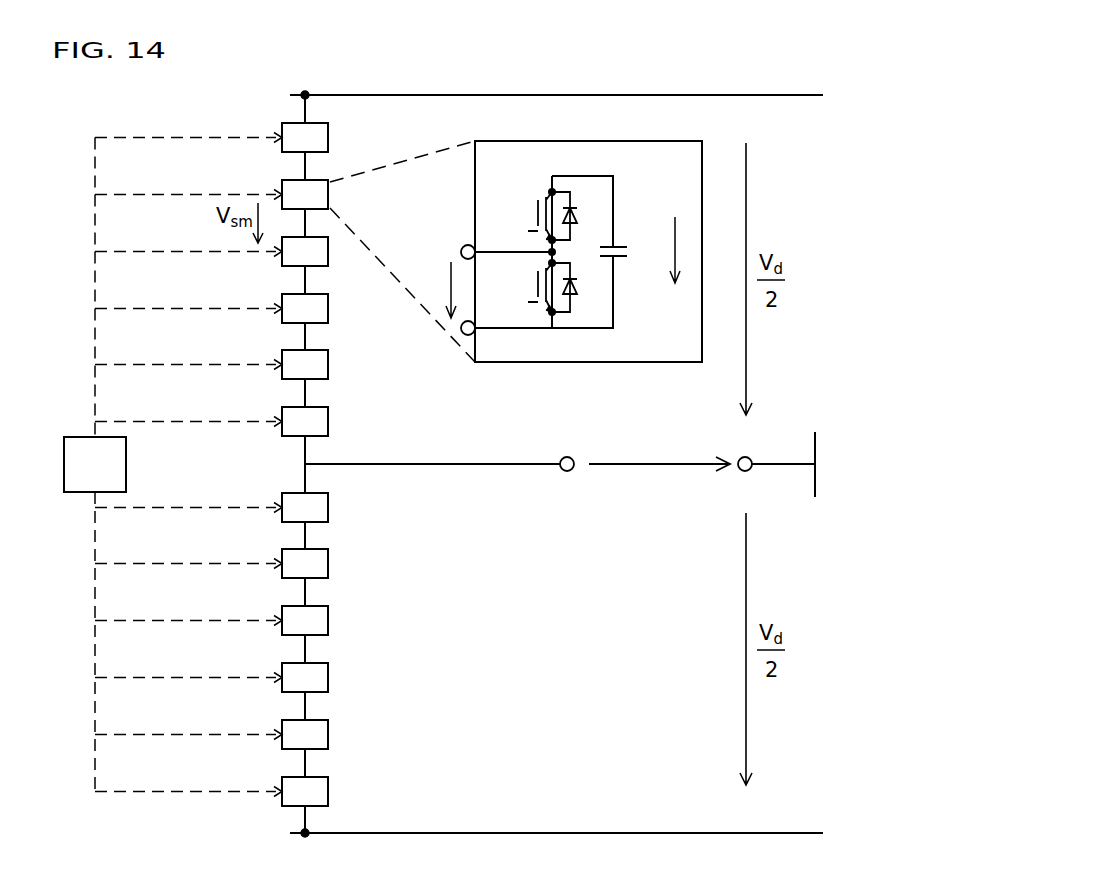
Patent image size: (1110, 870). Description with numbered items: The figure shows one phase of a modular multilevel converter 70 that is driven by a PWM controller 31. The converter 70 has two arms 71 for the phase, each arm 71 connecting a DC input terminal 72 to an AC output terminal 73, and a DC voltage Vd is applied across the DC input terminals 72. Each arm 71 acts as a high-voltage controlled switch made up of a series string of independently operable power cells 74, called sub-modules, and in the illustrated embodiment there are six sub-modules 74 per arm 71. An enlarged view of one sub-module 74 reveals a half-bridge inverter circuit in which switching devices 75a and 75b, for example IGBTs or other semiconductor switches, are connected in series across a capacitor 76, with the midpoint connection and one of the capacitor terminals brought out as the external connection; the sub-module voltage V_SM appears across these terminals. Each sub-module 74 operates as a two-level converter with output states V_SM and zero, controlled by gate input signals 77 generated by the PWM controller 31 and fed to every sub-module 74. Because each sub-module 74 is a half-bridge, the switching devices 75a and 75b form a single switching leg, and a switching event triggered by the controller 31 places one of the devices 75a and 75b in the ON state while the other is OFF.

The modular multilevel converter 70 is at (650, 63).
The DC input terminal 72 is at (767, 95).
The power cell 74 is at (492, 456).
The switching device 75a is at (536, 214).
The switching device 75b is at (536, 283).
The capacitor 76 is at (618, 247).
The gate input signals 77 is at (150, 138).
The arm 71 is at (368, 380).
The AC output terminal 73 is at (553, 475).
The PWM controller 31 is at (103, 477).